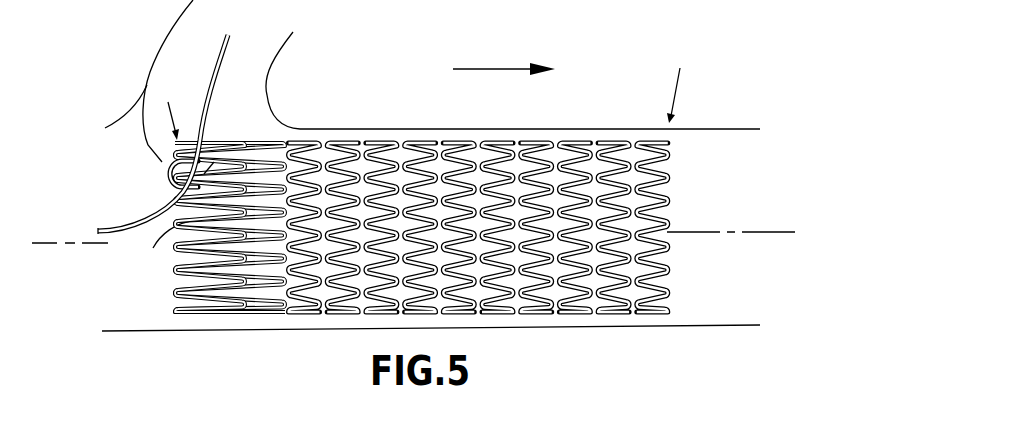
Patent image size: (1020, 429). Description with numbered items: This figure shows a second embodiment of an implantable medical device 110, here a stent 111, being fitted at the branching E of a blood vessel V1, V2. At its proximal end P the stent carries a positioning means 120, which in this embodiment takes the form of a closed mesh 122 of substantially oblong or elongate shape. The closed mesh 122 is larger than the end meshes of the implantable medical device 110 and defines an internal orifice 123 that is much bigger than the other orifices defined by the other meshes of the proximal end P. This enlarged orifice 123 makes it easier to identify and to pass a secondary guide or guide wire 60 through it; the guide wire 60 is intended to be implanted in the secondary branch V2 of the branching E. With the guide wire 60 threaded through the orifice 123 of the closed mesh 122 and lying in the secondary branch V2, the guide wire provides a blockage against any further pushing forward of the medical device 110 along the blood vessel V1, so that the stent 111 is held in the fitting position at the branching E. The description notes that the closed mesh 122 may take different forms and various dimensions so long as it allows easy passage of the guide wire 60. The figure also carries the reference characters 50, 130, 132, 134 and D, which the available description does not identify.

The blood vessel 50 is at (766, 231).
The guide wire 60 is at (215, 62).
The implantable medical device 110 is at (478, 195).
The stent 111 is at (488, 148).
The positioning means 120 is at (148, 132).
The closed mesh 122 is at (178, 175).
The orifice 123 is at (204, 174).
The proximal flared strut 130 is at (177, 262).
The proximal flared strut 132 is at (177, 290).
The connector struts 134 is at (595, 290).
The secondary branch V2 is at (172, 23).
The blood vessel V1 is at (558, 133).
The proximal end P is at (168, 109).
The branching E is at (277, 115).
The distal direction D is at (679, 81).